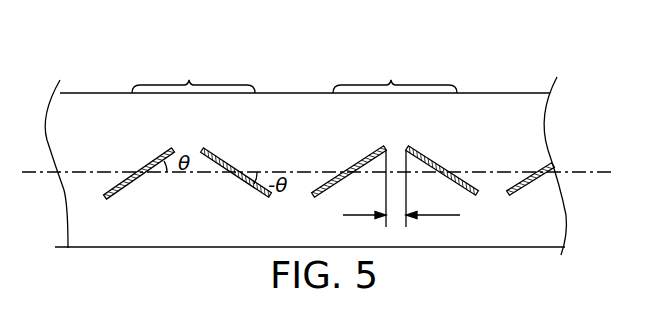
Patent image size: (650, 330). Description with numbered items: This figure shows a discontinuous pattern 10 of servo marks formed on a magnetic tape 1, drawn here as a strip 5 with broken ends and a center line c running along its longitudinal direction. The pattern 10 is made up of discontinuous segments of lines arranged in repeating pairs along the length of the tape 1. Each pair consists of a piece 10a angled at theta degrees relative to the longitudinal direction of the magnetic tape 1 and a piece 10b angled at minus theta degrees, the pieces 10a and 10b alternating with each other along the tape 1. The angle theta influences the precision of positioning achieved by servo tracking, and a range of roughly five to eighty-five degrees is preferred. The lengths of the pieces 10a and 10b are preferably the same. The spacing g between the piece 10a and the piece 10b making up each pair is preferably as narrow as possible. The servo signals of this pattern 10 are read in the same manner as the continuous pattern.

The magnetic tape 1 is at (495, 64).
The base body 5 is at (80, 134).
The pattern 10 is at (294, 72).
The piece 10a is at (153, 159).
The piece 10b is at (217, 157).
The center line c is at (573, 172).
The spacing g is at (401, 194).